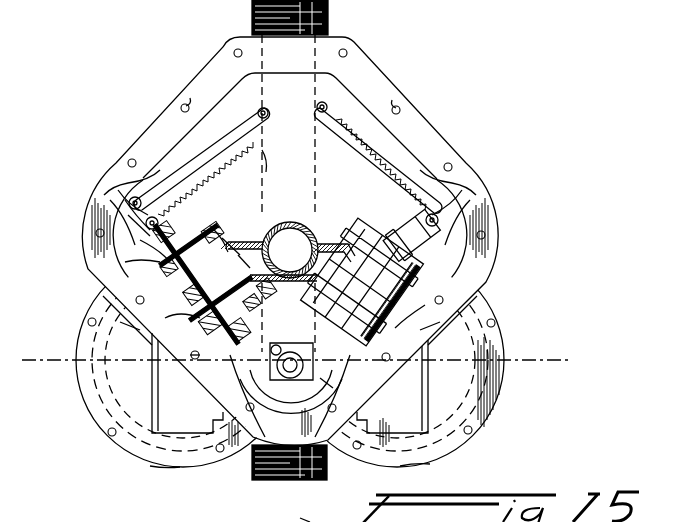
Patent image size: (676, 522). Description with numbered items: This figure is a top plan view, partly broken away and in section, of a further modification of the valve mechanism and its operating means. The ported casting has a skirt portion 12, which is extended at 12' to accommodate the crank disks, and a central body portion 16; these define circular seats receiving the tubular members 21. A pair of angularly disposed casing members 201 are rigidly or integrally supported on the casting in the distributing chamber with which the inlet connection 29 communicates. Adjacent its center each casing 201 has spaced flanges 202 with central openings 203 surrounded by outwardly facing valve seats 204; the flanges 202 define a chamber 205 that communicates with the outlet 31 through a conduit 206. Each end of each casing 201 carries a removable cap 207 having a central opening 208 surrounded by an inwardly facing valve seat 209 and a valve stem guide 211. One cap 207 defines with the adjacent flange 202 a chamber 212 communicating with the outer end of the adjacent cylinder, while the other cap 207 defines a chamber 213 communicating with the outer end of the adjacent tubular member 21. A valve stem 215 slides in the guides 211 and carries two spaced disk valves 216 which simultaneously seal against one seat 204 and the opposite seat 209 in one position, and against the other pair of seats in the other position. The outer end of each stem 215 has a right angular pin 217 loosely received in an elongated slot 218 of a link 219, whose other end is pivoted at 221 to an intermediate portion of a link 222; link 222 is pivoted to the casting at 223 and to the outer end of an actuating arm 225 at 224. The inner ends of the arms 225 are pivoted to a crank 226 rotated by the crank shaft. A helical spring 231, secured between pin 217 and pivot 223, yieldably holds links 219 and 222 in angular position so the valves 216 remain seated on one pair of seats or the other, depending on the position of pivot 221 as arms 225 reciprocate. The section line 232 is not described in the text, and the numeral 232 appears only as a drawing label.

The skirt portion 12 is at (283, 360).
The extended portion of skirt 12' is at (289, 470).
The central body portion 16 is at (22, 378).
The tubular member 21 is at (178, 143).
The inlet connection 29 is at (282, 481).
The outlet 31 is at (330, 28).
The casing member 201 is at (122, 324).
The flange 202 is at (175, 318).
The central opening 203 is at (239, 255).
The valve seat 204 is at (143, 284).
The chamber 205 is at (252, 288).
The conduit 206 is at (333, 246).
The removable cap 207 is at (198, 212).
The central opening 208 is at (135, 262).
The valve seat 209 is at (215, 228).
The valve stem guide 211 is at (160, 224).
The chamber 212 is at (196, 352).
The chamber 213 is at (223, 240).
The valve stem 215 is at (142, 240).
The disk valve 216 is at (262, 240).
The right angular pin 217 is at (140, 218).
The elongated slot 218 is at (129, 204).
The link 219 is at (160, 168).
The pivotal connection 221 is at (243, 148).
The link 222 is at (190, 98).
The pivotal connection 223 is at (267, 111).
The pivotal connection 224 is at (110, 198).
The actuating arm 225 is at (118, 188).
The crank 226 is at (334, 383).
The helical spring 231 is at (268, 158).
The base 232 is at (318, 518).